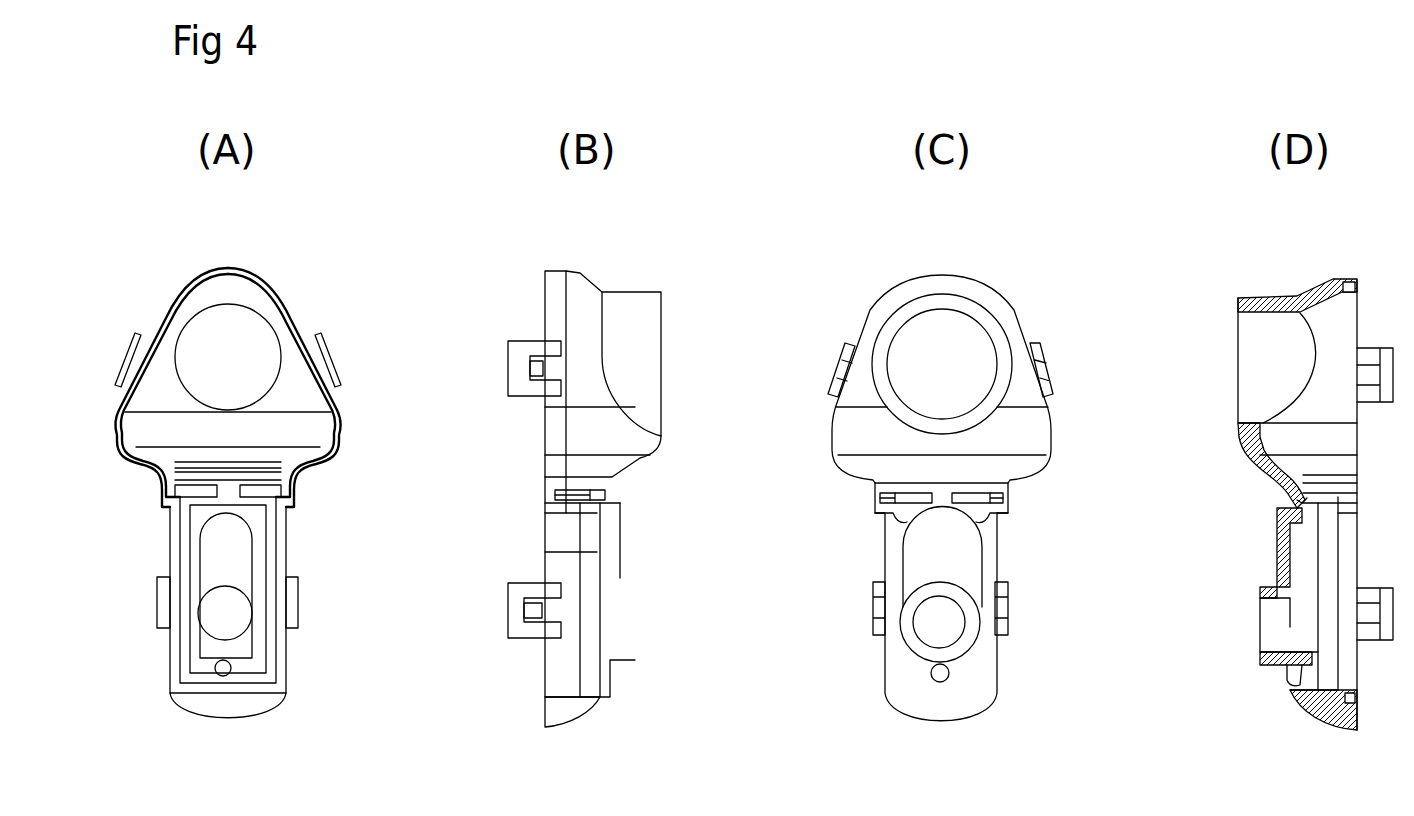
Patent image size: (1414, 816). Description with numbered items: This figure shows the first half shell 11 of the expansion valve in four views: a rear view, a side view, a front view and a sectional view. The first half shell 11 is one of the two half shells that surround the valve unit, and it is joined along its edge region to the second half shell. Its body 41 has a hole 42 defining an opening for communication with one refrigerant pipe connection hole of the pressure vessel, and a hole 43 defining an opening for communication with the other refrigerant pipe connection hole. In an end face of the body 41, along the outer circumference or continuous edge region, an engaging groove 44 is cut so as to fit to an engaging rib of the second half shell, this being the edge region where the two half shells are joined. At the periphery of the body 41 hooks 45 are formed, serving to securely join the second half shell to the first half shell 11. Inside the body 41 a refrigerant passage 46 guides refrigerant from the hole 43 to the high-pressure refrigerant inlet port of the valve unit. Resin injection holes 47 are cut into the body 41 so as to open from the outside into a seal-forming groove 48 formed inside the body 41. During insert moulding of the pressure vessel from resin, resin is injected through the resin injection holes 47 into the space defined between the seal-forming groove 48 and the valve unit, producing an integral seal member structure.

The first half shell 11 is at (993, 263).
The body 41 is at (1012, 307).
The hole 42 is at (250, 340).
The hole 43 is at (225, 618).
The engaging groove 44 is at (226, 274).
The hooks 45 is at (125, 352).
The refrigerant passage 46 is at (1300, 553).
The resin injection holes 47 is at (175, 492).
The seal-forming groove 48 is at (200, 668).